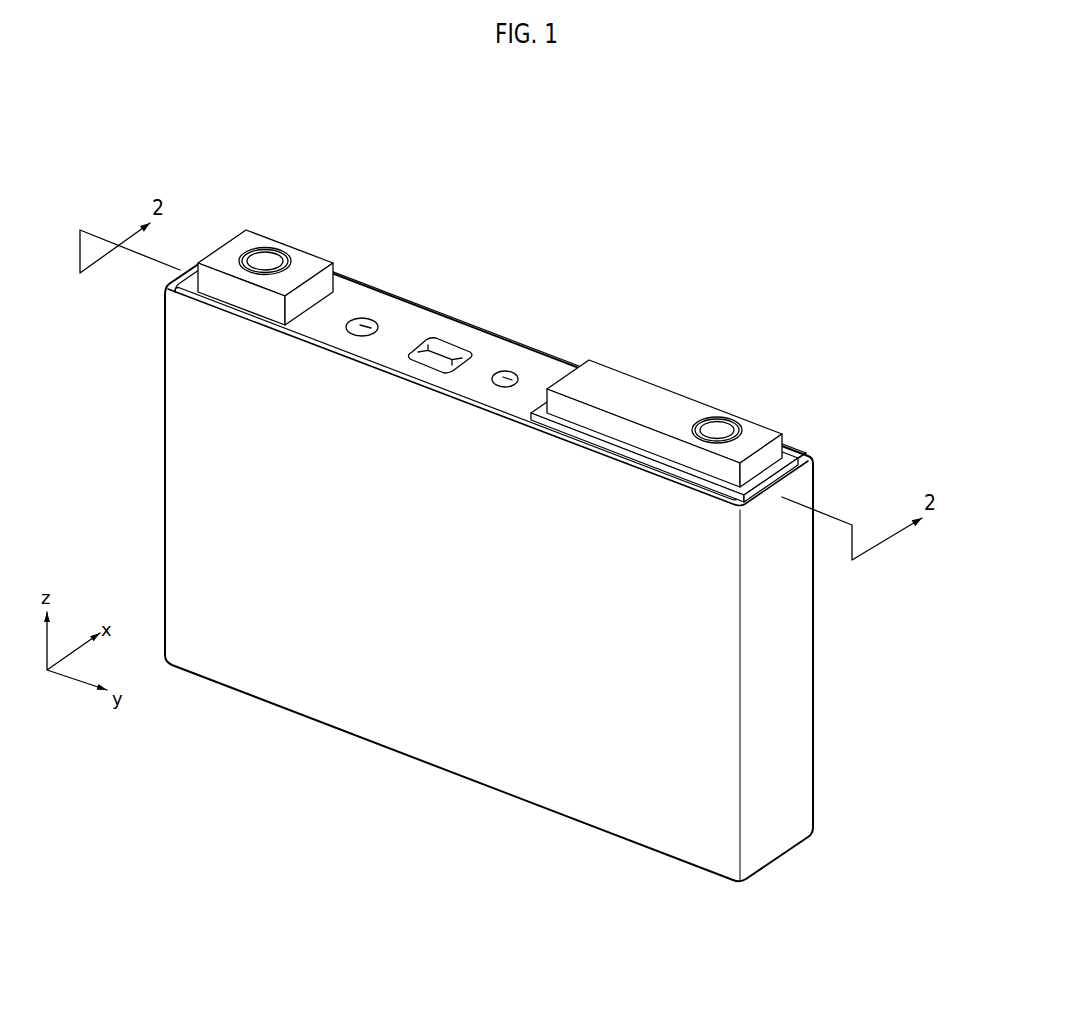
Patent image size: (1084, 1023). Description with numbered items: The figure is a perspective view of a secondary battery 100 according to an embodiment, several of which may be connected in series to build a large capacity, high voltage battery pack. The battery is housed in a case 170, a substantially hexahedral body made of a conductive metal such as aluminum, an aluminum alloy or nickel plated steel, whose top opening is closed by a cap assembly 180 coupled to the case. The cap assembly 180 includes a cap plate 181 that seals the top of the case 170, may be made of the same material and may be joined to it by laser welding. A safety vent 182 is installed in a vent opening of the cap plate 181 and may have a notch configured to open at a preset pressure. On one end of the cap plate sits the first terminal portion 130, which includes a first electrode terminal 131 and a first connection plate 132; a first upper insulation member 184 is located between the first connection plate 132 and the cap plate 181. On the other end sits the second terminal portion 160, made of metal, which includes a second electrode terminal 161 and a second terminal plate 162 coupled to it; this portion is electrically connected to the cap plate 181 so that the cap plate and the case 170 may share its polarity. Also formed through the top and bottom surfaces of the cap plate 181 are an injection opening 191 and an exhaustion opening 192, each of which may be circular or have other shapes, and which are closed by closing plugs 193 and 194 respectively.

The secondary battery 100 is at (562, 512).
The first terminal portion 130 is at (664, 391).
The first electrode terminal 131 is at (711, 428).
The first connection plate 132 is at (628, 390).
The second terminal portion 160 is at (277, 234).
The second electrode terminal 161 is at (264, 230).
The second terminal plate 162 is at (308, 263).
The case 170 is at (783, 682).
The cap assembly 180 is at (547, 373).
The cap plate 181 is at (398, 318).
The safety vent 182 is at (452, 343).
The first upper insulation member 184 is at (792, 448).
The injection opening 191 is at (366, 334).
The exhaustion opening 192 is at (504, 387).
The closing plug 193 is at (346, 323).
The closing plug 194 is at (492, 378).